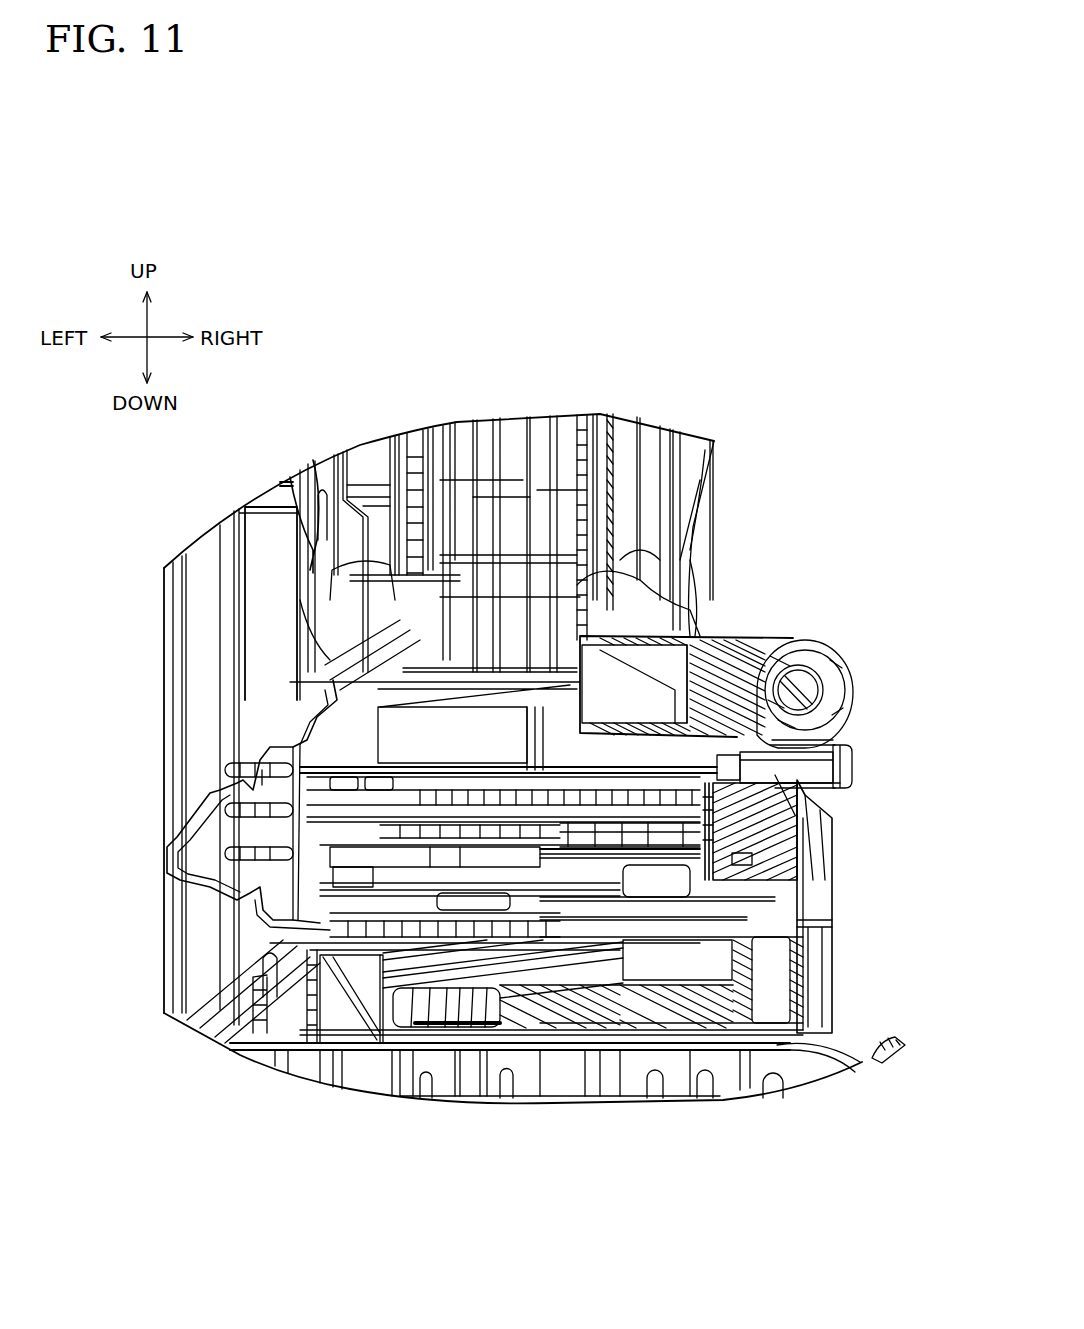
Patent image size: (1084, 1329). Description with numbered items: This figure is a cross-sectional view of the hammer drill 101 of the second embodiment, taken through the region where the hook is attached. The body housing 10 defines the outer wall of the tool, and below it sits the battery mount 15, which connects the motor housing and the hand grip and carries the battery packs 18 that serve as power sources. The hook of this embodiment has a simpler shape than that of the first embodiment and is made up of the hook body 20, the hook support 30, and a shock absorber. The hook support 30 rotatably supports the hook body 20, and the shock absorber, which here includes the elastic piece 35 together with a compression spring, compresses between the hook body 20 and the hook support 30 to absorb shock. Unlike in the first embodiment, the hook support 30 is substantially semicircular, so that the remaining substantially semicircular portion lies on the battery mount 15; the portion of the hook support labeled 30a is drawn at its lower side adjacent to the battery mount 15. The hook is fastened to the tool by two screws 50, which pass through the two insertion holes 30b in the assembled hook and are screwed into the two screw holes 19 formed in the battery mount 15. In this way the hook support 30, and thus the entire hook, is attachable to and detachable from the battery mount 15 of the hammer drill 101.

The hammer drill 101 is at (772, 332).
The body housing 10 is at (628, 412).
The hook support 30 is at (856, 658).
The elastic piece 35 is at (800, 650).
The hook body 20 is at (853, 683).
The arm lower portion 30a is at (813, 743).
The insertion holes 30b is at (817, 767).
The screws 50 is at (837, 757).
The screw holes 19 is at (835, 843).
The battery mount 15 is at (843, 848).
The battery packs 18 is at (597, 1083).